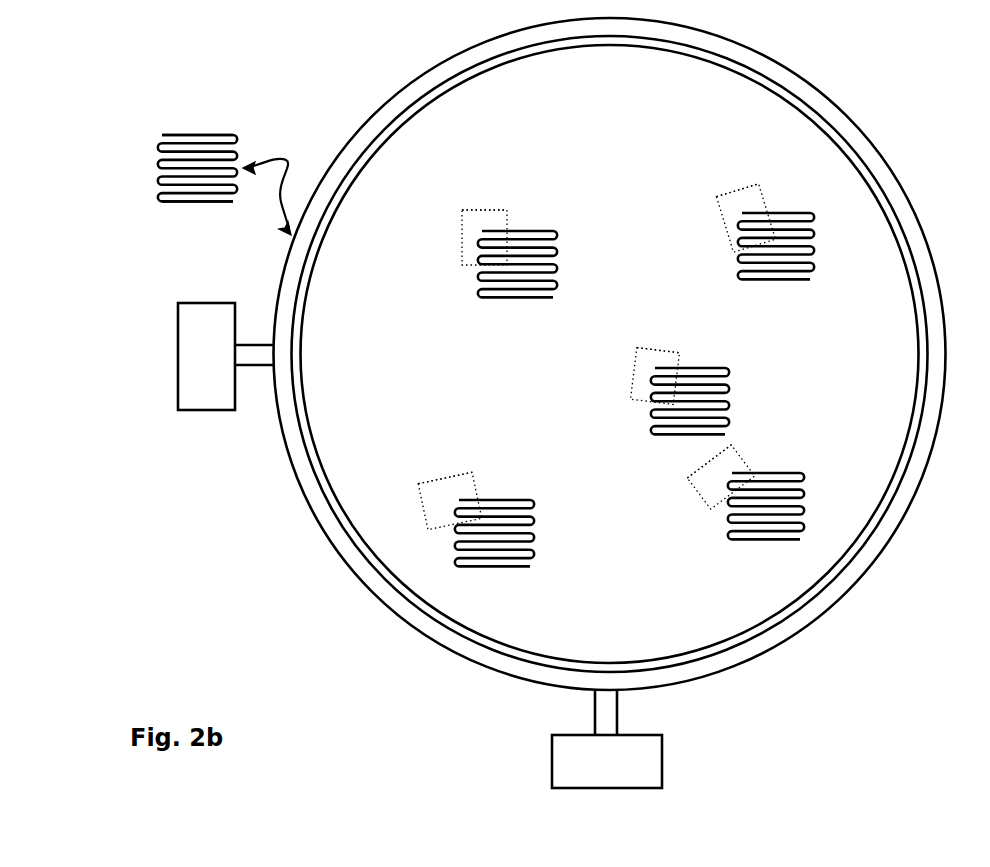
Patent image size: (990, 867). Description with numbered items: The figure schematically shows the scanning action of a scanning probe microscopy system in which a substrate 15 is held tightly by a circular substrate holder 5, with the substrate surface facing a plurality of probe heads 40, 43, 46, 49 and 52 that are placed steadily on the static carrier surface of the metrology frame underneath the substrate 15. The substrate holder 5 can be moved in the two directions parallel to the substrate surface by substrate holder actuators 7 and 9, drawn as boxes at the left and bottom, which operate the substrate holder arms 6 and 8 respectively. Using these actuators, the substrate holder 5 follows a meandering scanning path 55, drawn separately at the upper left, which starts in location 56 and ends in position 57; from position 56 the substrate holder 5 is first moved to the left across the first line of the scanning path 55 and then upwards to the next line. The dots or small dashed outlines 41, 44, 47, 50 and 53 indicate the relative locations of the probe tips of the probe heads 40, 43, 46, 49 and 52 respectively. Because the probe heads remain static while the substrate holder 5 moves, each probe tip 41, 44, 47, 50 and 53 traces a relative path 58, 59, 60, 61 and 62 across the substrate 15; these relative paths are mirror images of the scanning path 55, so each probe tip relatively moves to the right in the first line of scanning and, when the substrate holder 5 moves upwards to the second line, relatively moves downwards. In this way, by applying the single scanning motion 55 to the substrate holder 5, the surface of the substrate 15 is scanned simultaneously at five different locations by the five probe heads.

The substrate holder 5 is at (875, 550).
The substrate 15 is at (873, 490).
The substrate holder arm 6 is at (250, 368).
The substrate holder actuator 7 is at (198, 412).
The substrate holder arm 8 is at (595, 710).
The substrate holder actuator 9 is at (552, 763).
The probe head 40 is at (462, 238).
The probe tip 41 is at (488, 228).
The probe head 43 is at (722, 228).
The probe tip 44 is at (740, 208).
The probe head 46 is at (632, 372).
The probe tip 47 is at (658, 360).
The probe head 49 is at (700, 500).
The probe tip 50 is at (735, 470).
The probe head 52 is at (452, 478).
The probe tip 53 is at (470, 490).
The scanning path 55 is at (198, 130).
The start location 56 is at (232, 202).
The end position 57 is at (163, 130).
The relative path 58 is at (540, 228).
The relative path 59 is at (815, 248).
The relative path 60 is at (708, 362).
The relative path 61 is at (760, 540).
The relative path 62 is at (535, 530).